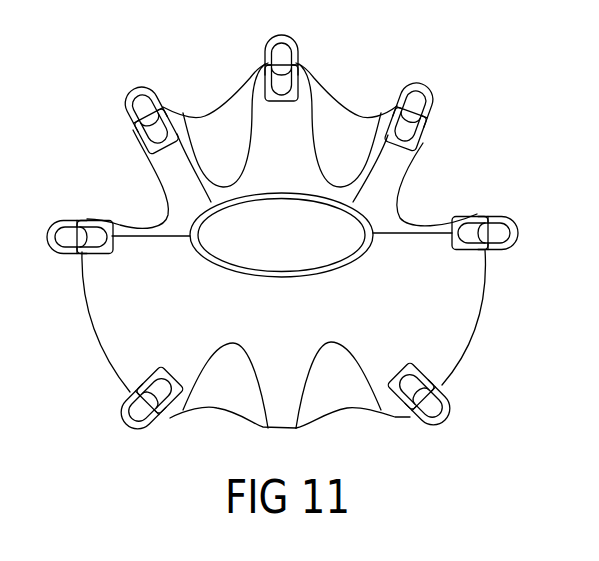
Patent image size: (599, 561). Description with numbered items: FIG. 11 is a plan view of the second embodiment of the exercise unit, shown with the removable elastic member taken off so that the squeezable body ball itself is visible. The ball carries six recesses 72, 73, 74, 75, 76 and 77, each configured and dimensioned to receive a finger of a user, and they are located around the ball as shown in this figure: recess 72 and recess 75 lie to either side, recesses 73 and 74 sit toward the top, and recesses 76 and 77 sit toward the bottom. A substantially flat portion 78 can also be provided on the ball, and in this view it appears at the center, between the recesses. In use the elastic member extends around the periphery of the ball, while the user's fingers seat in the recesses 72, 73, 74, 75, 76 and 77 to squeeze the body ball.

The recess 72 is at (145, 207).
The recess 73 is at (222, 160).
The recess 74 is at (337, 157).
The recess 75 is at (410, 205).
The recess 76 is at (328, 388).
The recess 77 is at (230, 383).
The substantially flat portion 78 is at (240, 243).